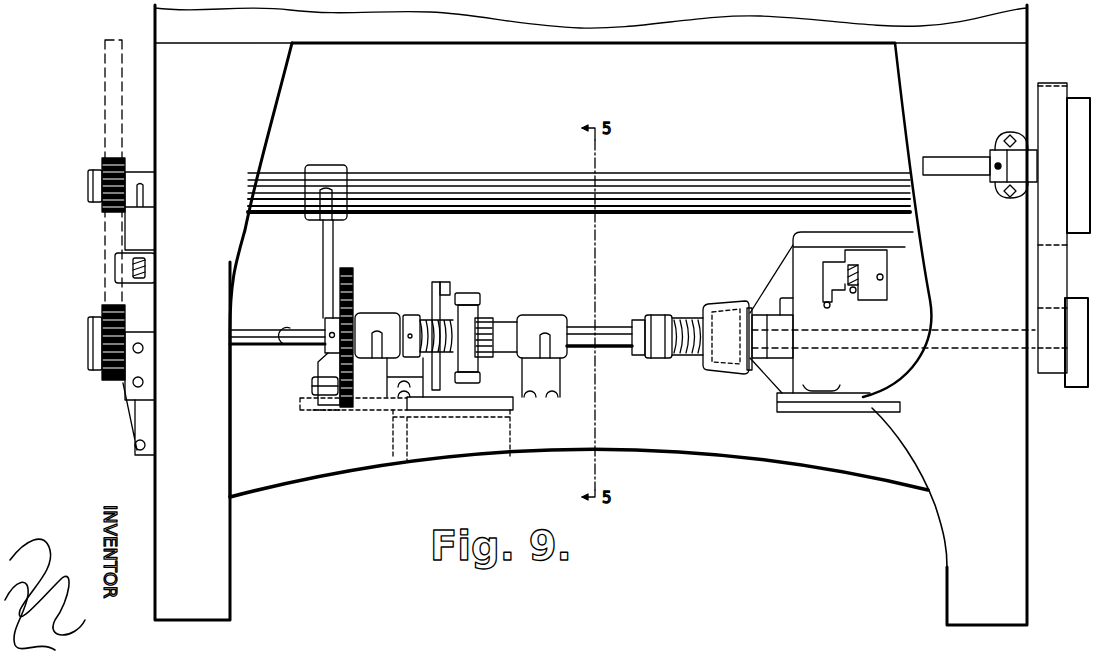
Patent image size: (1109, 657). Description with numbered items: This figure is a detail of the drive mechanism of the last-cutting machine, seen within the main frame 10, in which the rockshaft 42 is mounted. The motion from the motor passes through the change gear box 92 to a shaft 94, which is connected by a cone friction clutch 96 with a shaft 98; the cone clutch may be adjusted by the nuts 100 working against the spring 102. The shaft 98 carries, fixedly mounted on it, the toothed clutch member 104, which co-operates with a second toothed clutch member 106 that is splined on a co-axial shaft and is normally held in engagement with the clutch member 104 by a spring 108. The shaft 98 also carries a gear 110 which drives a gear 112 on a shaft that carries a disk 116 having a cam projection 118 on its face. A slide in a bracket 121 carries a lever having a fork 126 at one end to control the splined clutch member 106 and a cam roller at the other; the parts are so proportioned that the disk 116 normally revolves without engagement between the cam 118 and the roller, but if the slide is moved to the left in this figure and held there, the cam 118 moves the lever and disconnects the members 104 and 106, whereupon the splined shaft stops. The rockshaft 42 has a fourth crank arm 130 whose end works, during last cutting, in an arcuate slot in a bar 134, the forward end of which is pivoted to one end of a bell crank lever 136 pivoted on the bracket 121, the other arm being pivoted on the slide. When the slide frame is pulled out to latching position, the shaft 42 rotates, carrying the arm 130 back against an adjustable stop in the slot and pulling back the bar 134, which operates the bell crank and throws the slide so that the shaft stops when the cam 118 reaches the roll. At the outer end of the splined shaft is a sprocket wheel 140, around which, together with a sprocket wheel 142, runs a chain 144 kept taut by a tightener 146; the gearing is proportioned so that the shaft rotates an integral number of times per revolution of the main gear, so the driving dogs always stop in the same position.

The main frame 10 is at (591, 315).
The rockshaft 42 is at (478, 190).
The change gear box 92 is at (892, 322).
The shaft 94 is at (778, 338).
The cone friction clutch 96 is at (727, 322).
The shaft 98 is at (612, 333).
The nuts 100 is at (661, 345).
The spring 102 is at (686, 318).
The toothed clutch member 104 is at (538, 310).
The second toothed clutch member 106 is at (482, 326).
The spring 108 is at (440, 322).
The gear 110 is at (340, 328).
The gear 112 is at (353, 288).
The disk 116 is at (436, 282).
The cam projection 118 is at (448, 283).
The bracket 121 is at (456, 418).
The fork 126 is at (478, 360).
The fourth crank arm 130 is at (333, 238).
The bar 134 is at (312, 391).
The bell crank lever 136 is at (322, 405).
The sprocket wheel 140 is at (108, 345).
The sprocket wheel 142 is at (108, 385).
The chain 144 is at (112, 128).
The tightener 146 is at (100, 185).